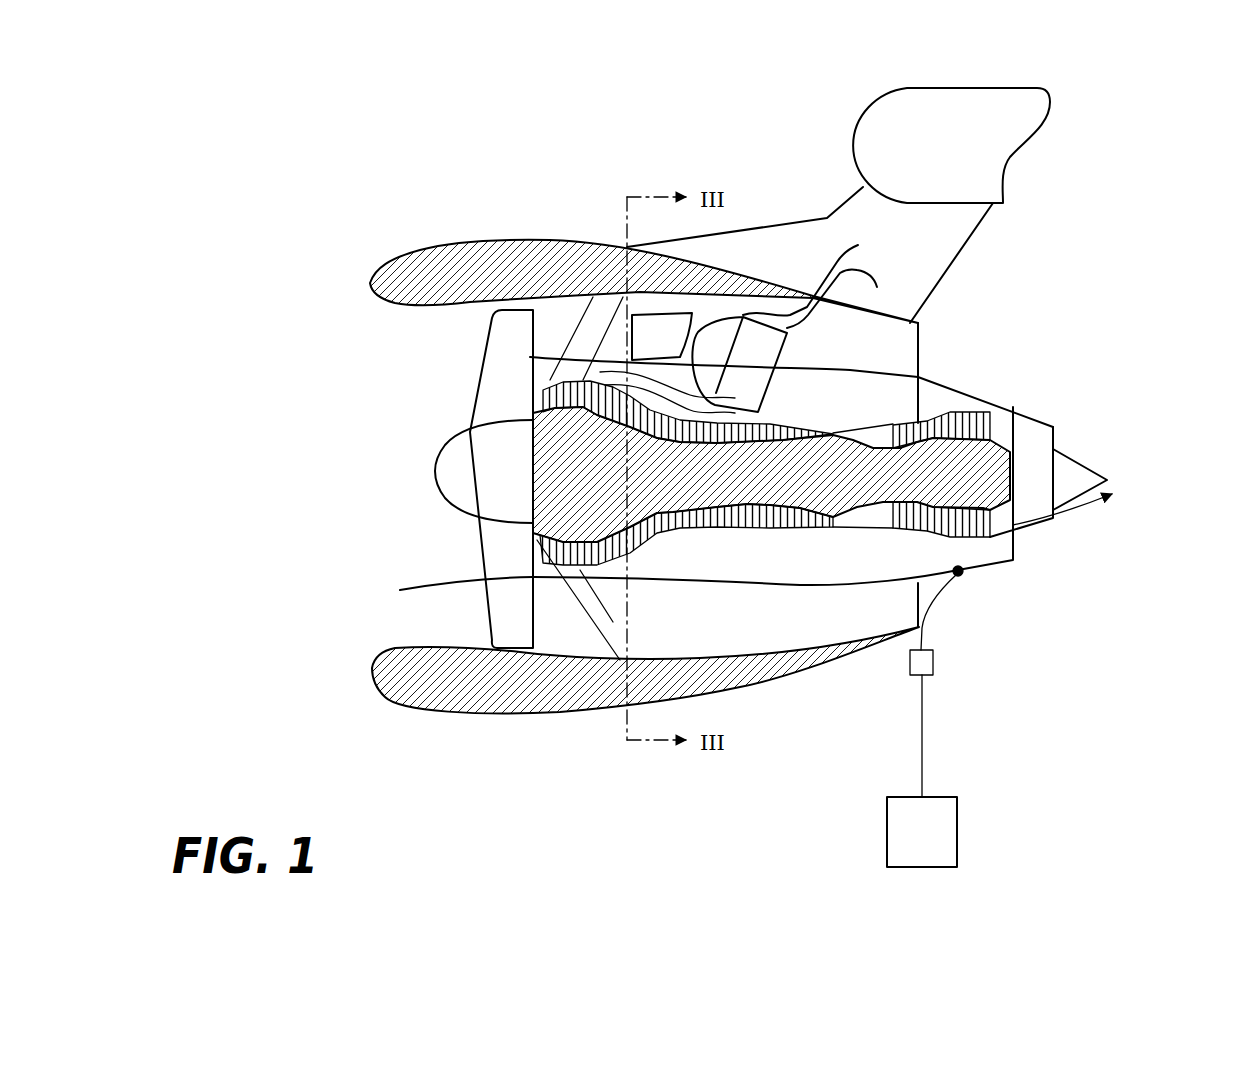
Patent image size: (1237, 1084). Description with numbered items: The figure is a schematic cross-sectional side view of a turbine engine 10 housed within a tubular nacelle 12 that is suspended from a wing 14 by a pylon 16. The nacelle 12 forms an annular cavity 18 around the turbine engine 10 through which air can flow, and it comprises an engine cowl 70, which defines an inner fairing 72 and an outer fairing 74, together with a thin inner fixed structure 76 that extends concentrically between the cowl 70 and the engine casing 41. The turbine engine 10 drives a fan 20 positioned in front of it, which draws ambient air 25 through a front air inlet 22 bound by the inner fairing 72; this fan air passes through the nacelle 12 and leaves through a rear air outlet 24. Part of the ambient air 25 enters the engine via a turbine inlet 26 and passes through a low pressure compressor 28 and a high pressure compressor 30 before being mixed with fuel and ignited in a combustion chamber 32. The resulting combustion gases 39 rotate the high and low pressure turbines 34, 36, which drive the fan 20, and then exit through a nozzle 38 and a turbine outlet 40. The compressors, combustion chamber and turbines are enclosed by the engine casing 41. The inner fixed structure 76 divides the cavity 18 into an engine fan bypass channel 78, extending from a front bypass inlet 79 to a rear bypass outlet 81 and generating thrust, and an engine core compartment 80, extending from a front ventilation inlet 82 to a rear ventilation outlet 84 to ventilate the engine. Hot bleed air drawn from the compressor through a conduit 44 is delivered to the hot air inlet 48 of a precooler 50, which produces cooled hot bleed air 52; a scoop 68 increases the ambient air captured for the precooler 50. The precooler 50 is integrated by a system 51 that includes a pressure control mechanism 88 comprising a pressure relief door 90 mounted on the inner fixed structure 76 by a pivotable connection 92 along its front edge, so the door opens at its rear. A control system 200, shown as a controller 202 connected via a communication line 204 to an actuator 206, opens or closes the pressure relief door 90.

The turbine engine 10 is at (667, 493).
The nacelle 12 is at (342, 232).
The wing 14 is at (880, 104).
The pylon 16 is at (797, 226).
The annular cavity 18 is at (457, 357).
The fan 20 is at (490, 562).
The front air inlet 22 is at (398, 427).
The rear air outlet 24 is at (1076, 612).
The ambient air 25 is at (558, 402).
The turbine inlet 26 is at (507, 543).
The low pressure compressor 28 is at (400, 590).
The high pressure compressor 30 is at (772, 522).
The combustion chamber 32 is at (868, 518).
The high pressure turbine 34 is at (913, 423).
The low pressure turbine 36 is at (970, 417).
The nozzle 38 is at (1033, 420).
The combustion gases 39 is at (1073, 512).
The turbine outlet 40 is at (1055, 447).
The engine casing 41 is at (863, 412).
The conduit 44 is at (530, 357).
The hot air inlet 48 is at (710, 408).
The precooler 50 is at (739, 364).
The system 51 is at (1159, 290).
The cooled hot bleed air 52 is at (860, 245).
The scoop 68 is at (662, 336).
The engine cowl 70 is at (545, 247).
The inner fairing 72 is at (393, 647).
The outer fairing 74 is at (440, 713).
The inner fixed structure 76 is at (807, 587).
The engine fan bypass channel 78 is at (707, 634).
The front bypass inlet 79 is at (615, 608).
The engine core compartment 80 is at (703, 550).
The rear bypass outlet 81 is at (917, 610).
The front ventilation inlet 82 is at (603, 558).
The rear ventilation outlet 84 is at (1018, 548).
The pressure control mechanism 88 is at (1005, 600).
The pressure relief door 90 is at (958, 577).
The pivotable connection 92 is at (953, 568).
The control system 200 is at (981, 857).
The controller 202 is at (887, 850).
The communication line 204 is at (920, 720).
The actuator 206 is at (910, 668).